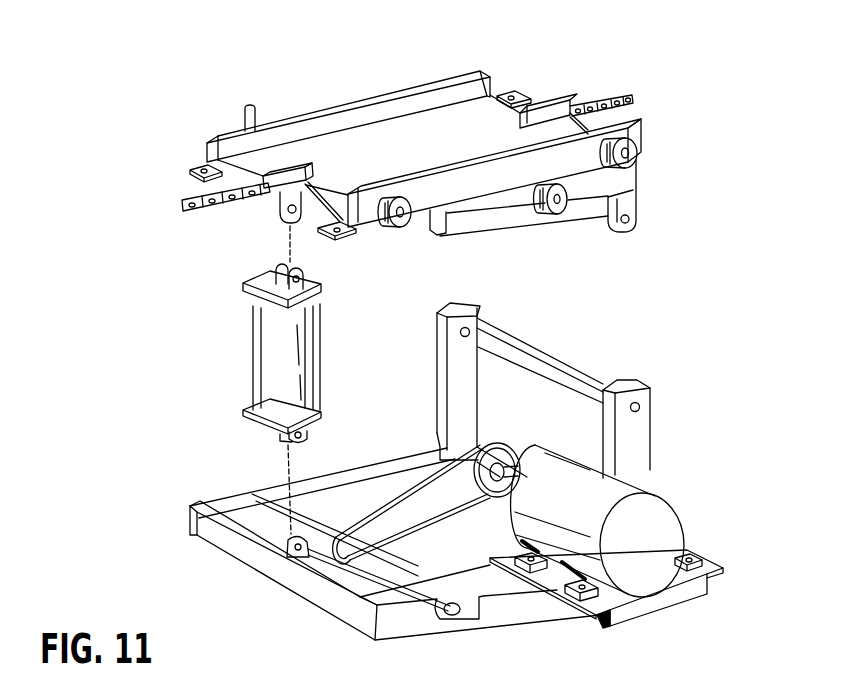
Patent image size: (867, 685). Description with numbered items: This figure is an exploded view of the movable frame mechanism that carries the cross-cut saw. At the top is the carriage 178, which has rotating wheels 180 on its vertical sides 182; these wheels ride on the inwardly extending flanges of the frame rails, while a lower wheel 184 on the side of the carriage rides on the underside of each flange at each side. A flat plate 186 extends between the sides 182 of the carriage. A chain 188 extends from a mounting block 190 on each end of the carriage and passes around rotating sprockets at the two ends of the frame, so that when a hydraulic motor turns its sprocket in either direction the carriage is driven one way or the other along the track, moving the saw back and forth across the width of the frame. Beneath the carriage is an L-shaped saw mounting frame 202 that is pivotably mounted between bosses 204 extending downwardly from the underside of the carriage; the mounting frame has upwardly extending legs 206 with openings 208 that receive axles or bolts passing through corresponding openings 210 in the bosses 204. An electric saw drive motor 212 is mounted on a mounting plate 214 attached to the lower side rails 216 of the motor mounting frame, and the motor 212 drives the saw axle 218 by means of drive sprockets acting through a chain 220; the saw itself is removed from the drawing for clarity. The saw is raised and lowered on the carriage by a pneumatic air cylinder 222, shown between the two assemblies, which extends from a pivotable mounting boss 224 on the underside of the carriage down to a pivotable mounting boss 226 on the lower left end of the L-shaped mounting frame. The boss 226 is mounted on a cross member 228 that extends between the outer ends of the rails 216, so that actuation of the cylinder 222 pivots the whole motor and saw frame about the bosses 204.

The carriage 178 is at (458, 58).
The rotating wheels 180 is at (633, 153).
The vertical sides 182 is at (379, 110).
The lower wheel 184 is at (558, 214).
The flat plate 186 is at (486, 115).
The chain 188 is at (182, 200).
The mounting block 190 is at (287, 172).
The L-shaped saw mounting frame 202 is at (650, 447).
The bosses 204 is at (637, 210).
The upwardly extending legs 206 is at (642, 422).
The openings 208 is at (637, 403).
The openings 210 is at (630, 222).
The electric saw drive motor 212 is at (667, 517).
The mounting plate 214 is at (617, 610).
The lower side rails 216 is at (405, 622).
The saw axle 218 is at (397, 571).
The chain 220 is at (400, 497).
The pneumatic air cylinder 222 is at (265, 355).
The pivotable mounting boss 224 is at (280, 217).
The pivotable mounting boss 226 is at (293, 537).
The cross member 228 is at (325, 570).